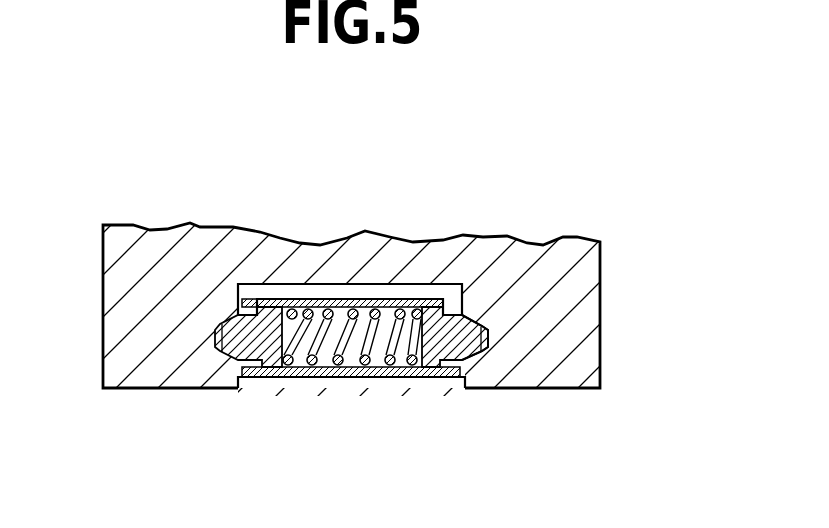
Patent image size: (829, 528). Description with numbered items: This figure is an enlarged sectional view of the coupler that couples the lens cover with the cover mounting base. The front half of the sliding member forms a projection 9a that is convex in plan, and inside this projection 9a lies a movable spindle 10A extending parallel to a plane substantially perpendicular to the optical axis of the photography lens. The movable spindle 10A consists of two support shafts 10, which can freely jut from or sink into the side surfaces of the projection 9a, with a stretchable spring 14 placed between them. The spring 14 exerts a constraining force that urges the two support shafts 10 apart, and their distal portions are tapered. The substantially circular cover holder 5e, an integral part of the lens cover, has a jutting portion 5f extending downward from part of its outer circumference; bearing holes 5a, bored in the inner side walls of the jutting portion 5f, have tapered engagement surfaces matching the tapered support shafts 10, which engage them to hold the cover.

The bearing hole 5a is at (503, 320).
The cover holder 5e is at (287, 268).
The jutting portion 5f is at (560, 353).
The projection 9a is at (450, 283).
The support shaft 10 is at (248, 380).
The movable spindle 10A is at (373, 380).
The spring 14 is at (323, 380).